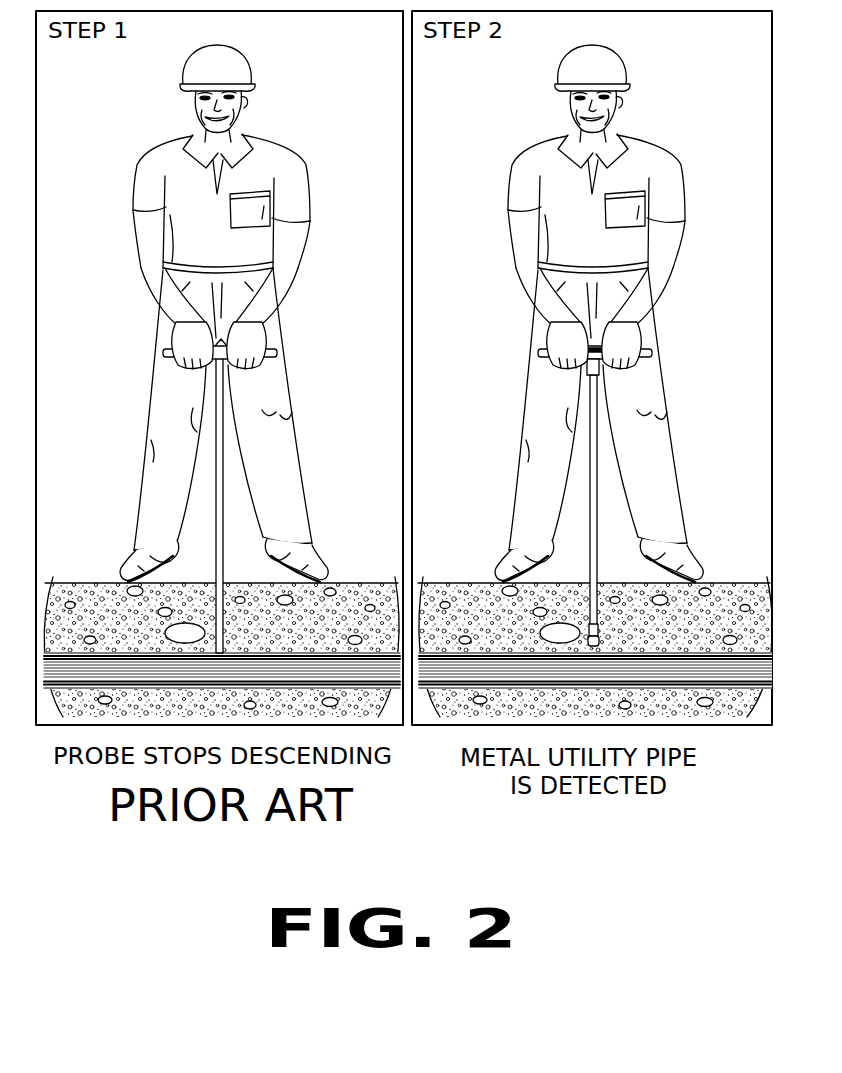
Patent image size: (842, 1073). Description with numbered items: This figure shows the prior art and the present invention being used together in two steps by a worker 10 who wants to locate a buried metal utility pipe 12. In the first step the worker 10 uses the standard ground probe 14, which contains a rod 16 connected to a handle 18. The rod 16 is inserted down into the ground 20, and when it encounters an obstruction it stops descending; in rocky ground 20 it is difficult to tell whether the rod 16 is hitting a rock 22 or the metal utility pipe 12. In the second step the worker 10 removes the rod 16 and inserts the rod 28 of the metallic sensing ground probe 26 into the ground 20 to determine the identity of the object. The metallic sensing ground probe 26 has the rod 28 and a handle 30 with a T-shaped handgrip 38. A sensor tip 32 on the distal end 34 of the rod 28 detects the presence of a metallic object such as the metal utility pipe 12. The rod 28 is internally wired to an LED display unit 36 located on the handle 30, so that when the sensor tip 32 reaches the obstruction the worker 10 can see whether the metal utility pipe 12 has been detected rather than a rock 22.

The worker 10 is at (162, 152).
The metal utility pipe 12 is at (75, 663).
The standard ground probe 14 is at (232, 478).
The rod of probe 16 is at (218, 400).
The handle of probe 18 is at (278, 353).
The ground 20 is at (118, 603).
The rock in ground 22 is at (188, 633).
The metallic sensing ground probe 26 is at (615, 463).
The rod of probe 28 is at (590, 412).
The handle of probe 30 is at (650, 352).
The sensor tip 32 is at (599, 642).
The distal end of rod 34 is at (598, 639).
The LED display unit 36 is at (585, 346).
The T-shaped handgrip 38 is at (600, 370).